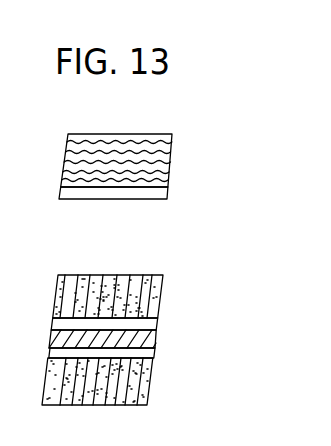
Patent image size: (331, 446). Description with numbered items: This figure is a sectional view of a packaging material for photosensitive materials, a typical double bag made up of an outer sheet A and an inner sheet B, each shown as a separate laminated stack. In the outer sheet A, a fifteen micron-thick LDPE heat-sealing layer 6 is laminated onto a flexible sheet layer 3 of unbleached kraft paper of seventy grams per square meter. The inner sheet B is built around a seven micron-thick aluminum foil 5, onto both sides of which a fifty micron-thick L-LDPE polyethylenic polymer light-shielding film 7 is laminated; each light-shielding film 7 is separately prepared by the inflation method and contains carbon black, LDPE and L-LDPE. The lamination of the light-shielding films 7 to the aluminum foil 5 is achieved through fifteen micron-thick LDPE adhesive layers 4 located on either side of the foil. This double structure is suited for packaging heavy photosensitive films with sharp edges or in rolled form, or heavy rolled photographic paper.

The flexible sheet layer 3 is at (168, 158).
The LDPE heat-sealing layer 6 is at (138, 193).
The L-LDPE polyethylenic polymer light-shielding film 7 is at (160, 297).
The LDPE adhesive layer 4 is at (157, 323).
The aluminum foil 5 is at (131, 343).
The outer sheet A is at (158, 169).
The inner sheet B is at (149, 340).